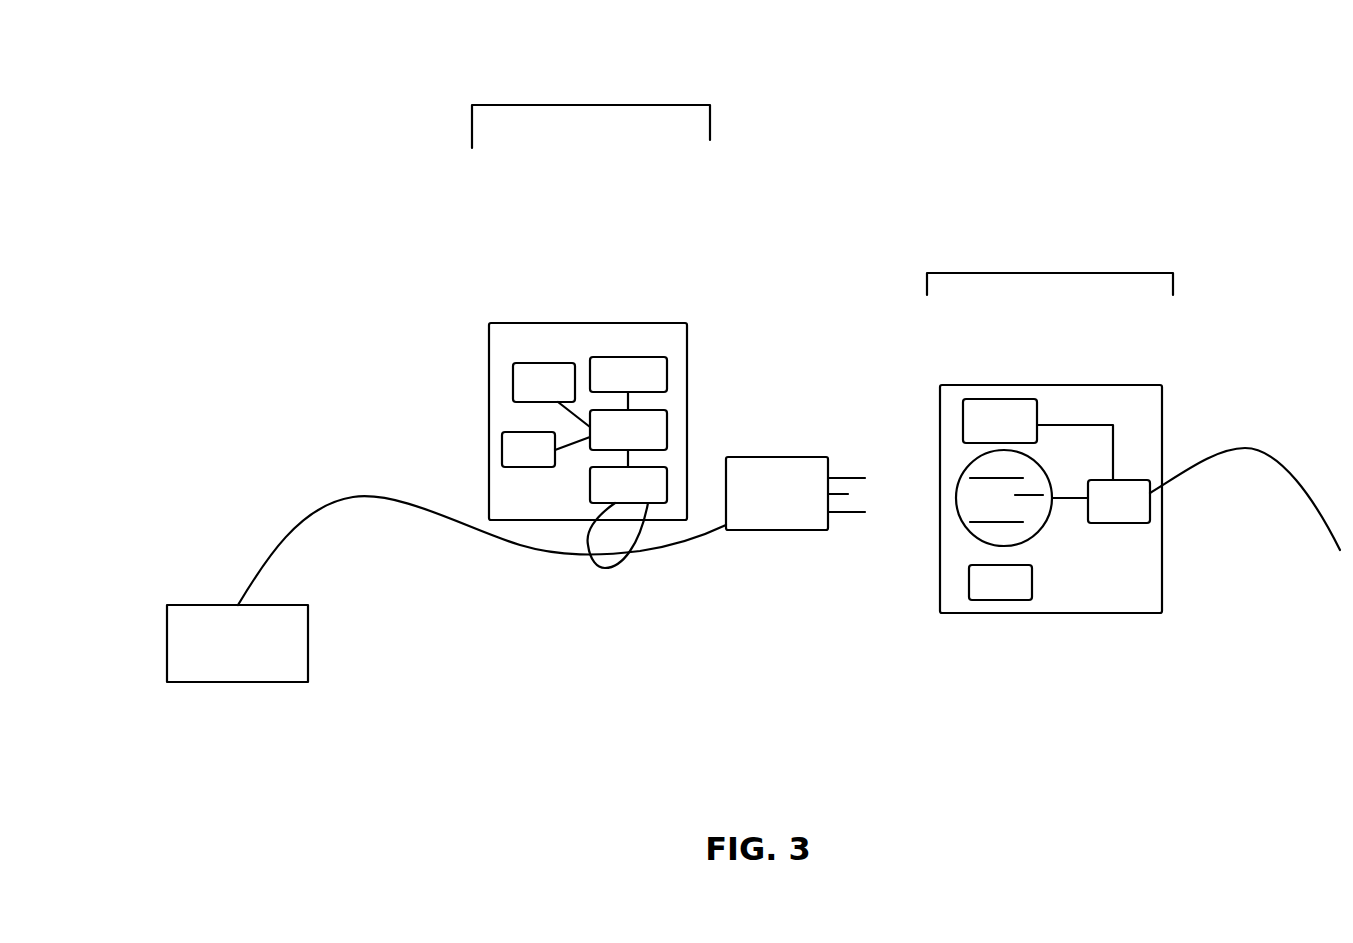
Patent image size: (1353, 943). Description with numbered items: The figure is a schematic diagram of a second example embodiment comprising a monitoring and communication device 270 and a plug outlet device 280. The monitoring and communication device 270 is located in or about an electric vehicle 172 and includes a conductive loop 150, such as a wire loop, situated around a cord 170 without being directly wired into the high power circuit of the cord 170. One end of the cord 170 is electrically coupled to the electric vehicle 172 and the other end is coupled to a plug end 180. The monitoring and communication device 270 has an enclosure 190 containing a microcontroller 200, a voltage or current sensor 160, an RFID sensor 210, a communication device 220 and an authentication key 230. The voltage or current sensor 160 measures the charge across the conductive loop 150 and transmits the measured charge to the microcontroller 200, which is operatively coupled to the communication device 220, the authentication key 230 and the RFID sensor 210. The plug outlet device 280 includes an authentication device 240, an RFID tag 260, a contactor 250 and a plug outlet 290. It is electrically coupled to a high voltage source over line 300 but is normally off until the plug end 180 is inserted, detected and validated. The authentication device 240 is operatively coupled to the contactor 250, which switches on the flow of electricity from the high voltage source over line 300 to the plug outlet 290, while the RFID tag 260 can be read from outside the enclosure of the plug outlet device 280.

The conductive loop 150 is at (617, 567).
The voltage or current sensor 160 is at (628, 485).
The cord 170 is at (353, 497).
The electric vehicle 172 is at (237, 643).
The plug end 180 is at (795, 493).
The enclosure 190 is at (622, 323).
The microcontroller 200 is at (628, 430).
The RFID sensor 210 is at (628, 374).
The communication device 220 is at (544, 382).
The authentication key 230 is at (528, 449).
The authentication device 240 is at (1000, 421).
The contactor 250 is at (1119, 501).
The RFID tag 260 is at (1000, 582).
The monitoring and communication device 270 is at (591, 88).
The plug outlet device 280 is at (1050, 249).
The plug outlet 290 is at (1038, 535).
The high voltage source line 300 is at (1247, 448).